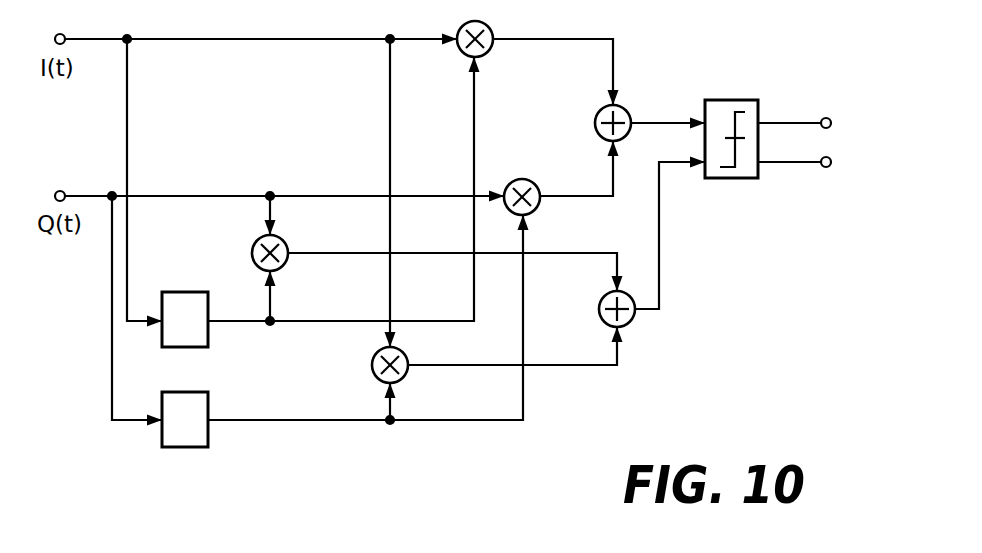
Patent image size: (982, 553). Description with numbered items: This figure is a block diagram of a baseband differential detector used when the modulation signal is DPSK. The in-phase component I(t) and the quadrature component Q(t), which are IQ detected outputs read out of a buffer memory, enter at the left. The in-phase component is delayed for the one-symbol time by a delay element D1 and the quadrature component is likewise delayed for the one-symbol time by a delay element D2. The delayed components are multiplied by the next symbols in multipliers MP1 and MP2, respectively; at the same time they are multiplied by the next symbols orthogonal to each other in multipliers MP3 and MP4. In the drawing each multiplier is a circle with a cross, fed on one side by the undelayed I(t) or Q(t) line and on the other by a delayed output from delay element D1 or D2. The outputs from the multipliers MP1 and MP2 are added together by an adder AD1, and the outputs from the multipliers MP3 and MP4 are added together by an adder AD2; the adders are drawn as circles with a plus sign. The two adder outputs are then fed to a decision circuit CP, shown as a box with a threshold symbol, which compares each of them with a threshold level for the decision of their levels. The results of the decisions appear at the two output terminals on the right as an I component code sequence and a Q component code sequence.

The multiplier MP1 is at (459, 49).
The multiplier MP2 is at (520, 179).
The multiplier MP3 is at (256, 244).
The multiplier MP4 is at (372, 361).
The adder AD1 is at (626, 110).
The adder AD2 is at (632, 324).
The decision circuit CP is at (728, 100).
The delay element D1 is at (195, 347).
The delay element D2 is at (188, 447).